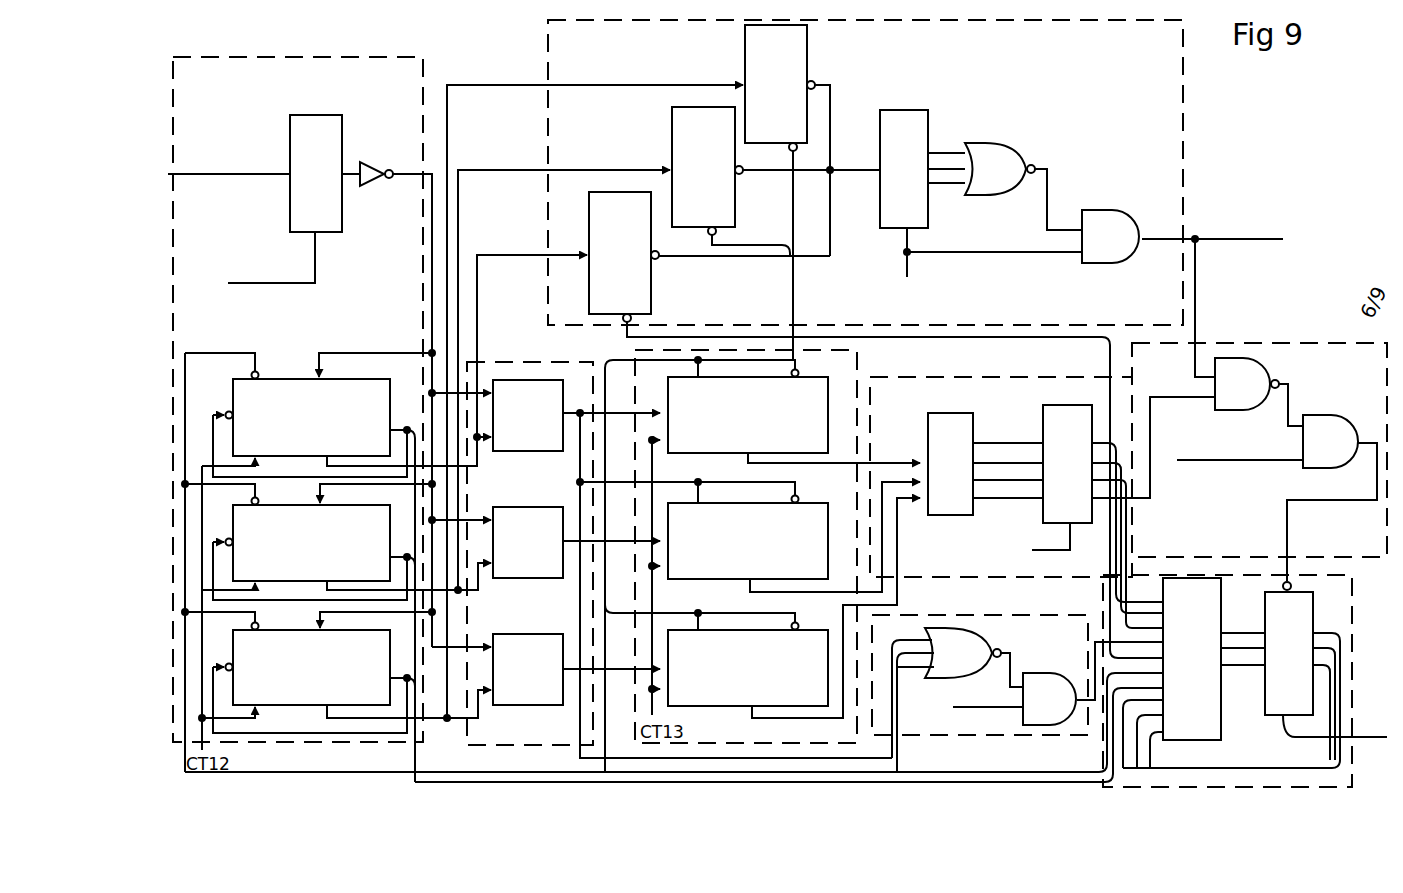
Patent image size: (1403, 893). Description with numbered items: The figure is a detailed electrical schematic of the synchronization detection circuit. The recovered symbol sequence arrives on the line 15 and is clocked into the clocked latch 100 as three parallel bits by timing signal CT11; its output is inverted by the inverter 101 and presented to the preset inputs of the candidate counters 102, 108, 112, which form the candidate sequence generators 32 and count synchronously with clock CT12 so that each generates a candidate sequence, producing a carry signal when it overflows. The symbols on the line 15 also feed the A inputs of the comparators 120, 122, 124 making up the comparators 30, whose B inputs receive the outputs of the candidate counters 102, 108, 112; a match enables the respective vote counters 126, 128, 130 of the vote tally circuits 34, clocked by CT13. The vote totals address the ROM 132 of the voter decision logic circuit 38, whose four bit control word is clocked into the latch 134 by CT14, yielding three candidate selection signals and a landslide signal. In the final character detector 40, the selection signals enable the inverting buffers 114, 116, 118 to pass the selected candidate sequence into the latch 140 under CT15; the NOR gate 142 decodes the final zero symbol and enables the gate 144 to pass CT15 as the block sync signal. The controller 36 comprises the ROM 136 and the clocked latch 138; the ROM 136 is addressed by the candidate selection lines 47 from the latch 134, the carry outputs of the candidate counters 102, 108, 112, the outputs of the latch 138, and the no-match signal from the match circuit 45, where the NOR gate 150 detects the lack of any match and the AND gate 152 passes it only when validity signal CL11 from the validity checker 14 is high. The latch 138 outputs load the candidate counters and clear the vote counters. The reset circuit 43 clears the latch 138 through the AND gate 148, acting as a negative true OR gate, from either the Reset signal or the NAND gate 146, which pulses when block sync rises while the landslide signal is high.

The validity checker 14 is at (928, 771).
The line 15 is at (228, 172).
The comparators 30 is at (500, 362).
The candidate sequence generators 32 is at (371, 57).
The vote tally circuits 34 is at (776, 751).
The controller 36 is at (1345, 785).
The voter decision logic circuit 38 is at (993, 378).
The final character detector 40 is at (1185, 137).
The reset circuit 43 is at (1290, 343).
The match circuit 45 is at (1015, 737).
The candidate selection lines 47 is at (1118, 523).
The clocked latch 100 is at (342, 220).
The inverter 101 is at (390, 181).
The candidate counter 102 is at (278, 374).
The candidate counter 108 is at (300, 582).
The candidate counter 112 is at (300, 706).
The inverting buffer 114 is at (807, 45).
The inverting buffer 116 is at (672, 126).
The inverting buffer 118 is at (651, 291).
The comparator 120 is at (540, 453).
The comparator 122 is at (540, 580).
The comparator 124 is at (540, 707).
The vote counter 126 is at (812, 377).
The vote counter 128 is at (812, 503).
The vote counter 130 is at (700, 712).
The ROM 132 is at (937, 413).
The latch 134 is at (1043, 423).
The ROM 136 is at (1211, 741).
The clocked latch 138 is at (1255, 675).
The latch 140 is at (916, 110).
The NOR gate 142 is at (1012, 150).
The gate 144 is at (1122, 264).
The NAND gate 146 is at (1268, 371).
The AND gate 148 is at (1345, 415).
The NOR gate 150 is at (968, 680).
The AND gate 152 is at (1045, 673).